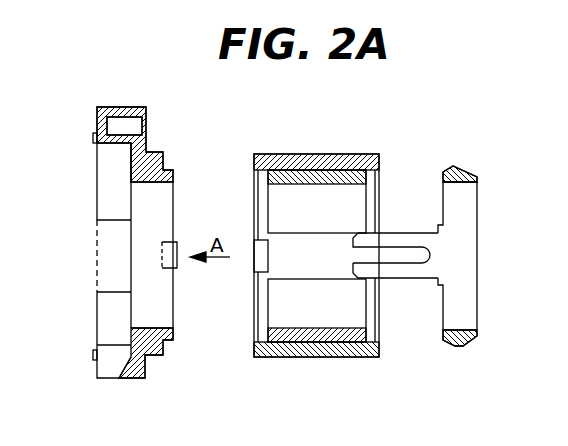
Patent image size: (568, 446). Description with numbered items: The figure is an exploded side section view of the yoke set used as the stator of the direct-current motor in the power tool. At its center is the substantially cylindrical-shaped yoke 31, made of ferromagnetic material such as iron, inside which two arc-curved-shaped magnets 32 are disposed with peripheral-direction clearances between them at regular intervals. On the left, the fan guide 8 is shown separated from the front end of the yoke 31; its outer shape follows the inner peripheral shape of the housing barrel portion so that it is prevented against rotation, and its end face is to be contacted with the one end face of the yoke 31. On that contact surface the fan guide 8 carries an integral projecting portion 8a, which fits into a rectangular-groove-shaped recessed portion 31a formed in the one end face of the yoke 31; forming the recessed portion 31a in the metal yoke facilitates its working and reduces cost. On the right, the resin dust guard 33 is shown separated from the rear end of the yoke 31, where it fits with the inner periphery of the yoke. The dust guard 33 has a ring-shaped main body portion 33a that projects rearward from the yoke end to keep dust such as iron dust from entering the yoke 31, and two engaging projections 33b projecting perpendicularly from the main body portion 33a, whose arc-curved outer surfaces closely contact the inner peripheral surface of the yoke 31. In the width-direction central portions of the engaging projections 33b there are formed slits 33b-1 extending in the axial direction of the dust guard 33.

The fan guide 8 is at (146, 124).
The projecting portion 8a is at (177, 241).
The yoke 31 is at (355, 154).
The recessed portion 31a is at (258, 266).
The magnets 32 is at (354, 204).
The dust guard 33 is at (465, 169).
The main body portion 33a is at (465, 346).
The engaging projections 33b is at (411, 279).
The slits 33b-1 is at (422, 253).